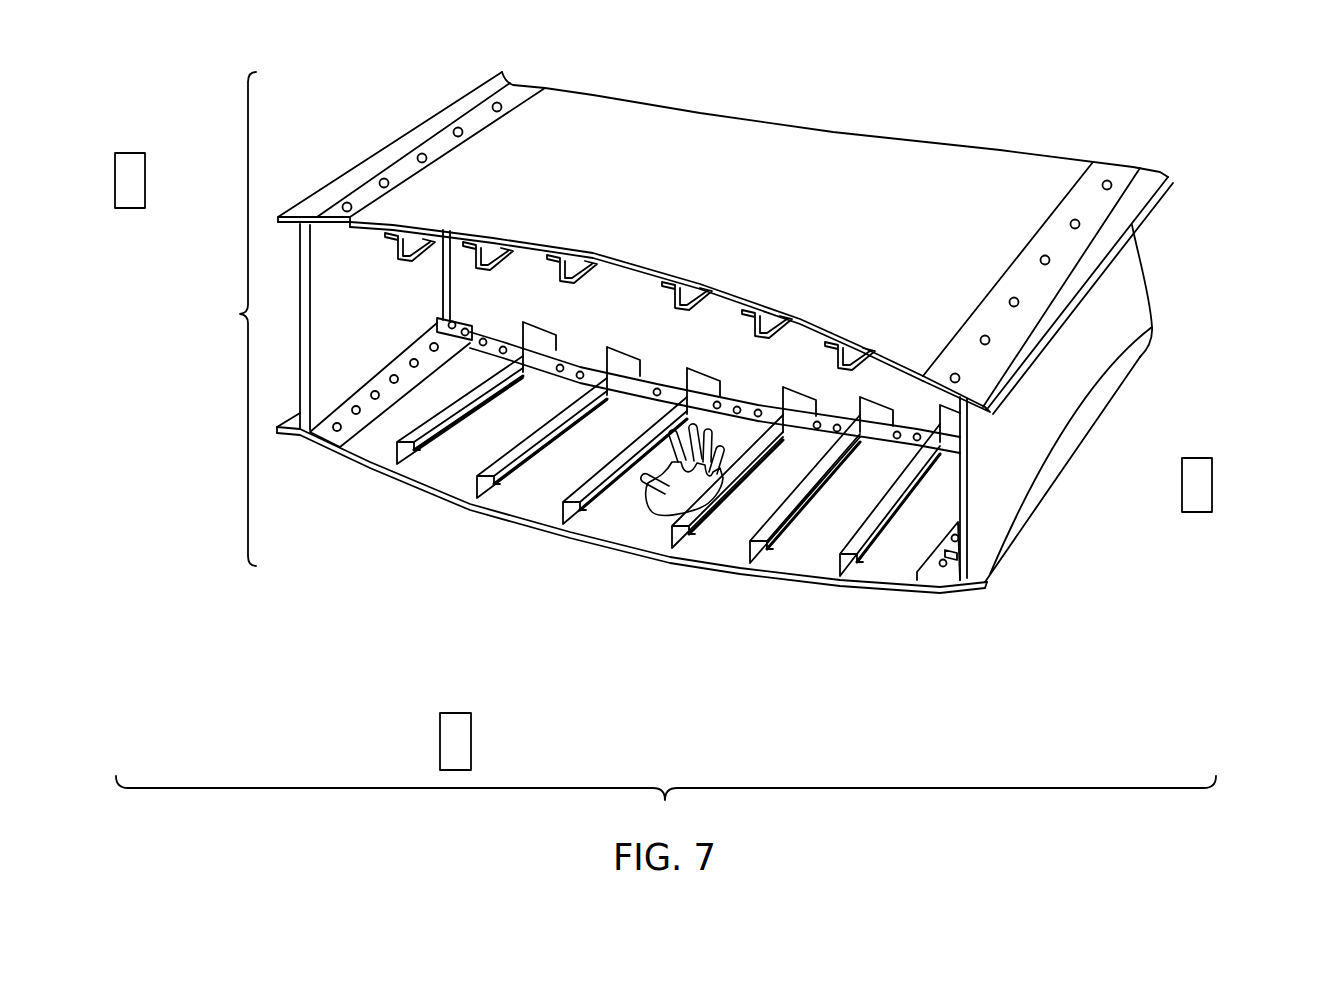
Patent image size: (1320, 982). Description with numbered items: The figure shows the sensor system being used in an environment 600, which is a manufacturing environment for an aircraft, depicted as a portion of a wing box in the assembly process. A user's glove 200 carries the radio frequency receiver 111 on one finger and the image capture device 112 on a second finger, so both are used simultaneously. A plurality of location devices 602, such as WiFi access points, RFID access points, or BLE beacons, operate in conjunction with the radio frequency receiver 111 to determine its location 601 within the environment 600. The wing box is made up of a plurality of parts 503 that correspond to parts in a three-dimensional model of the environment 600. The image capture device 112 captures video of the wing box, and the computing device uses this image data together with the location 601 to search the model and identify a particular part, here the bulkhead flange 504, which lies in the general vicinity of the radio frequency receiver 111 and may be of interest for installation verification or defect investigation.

The environment 600 is at (725, 315).
The location 601 is at (732, 444).
The location devices 602 is at (145, 185).
The plurality of parts 503 is at (228, 319).
The bulkhead flange 504 is at (715, 368).
The glove 200 is at (654, 413).
The radio frequency receiver 111 is at (713, 440).
The image capture device 112 is at (674, 435).